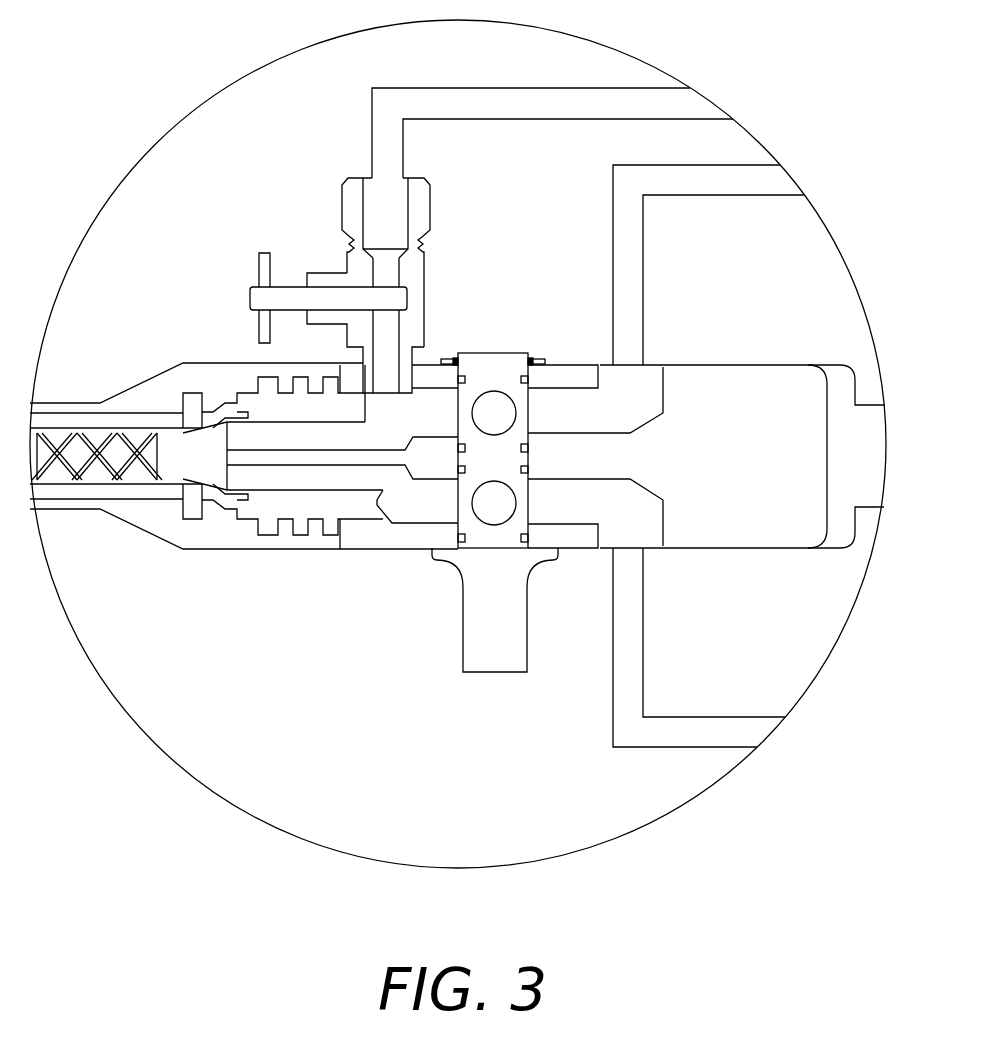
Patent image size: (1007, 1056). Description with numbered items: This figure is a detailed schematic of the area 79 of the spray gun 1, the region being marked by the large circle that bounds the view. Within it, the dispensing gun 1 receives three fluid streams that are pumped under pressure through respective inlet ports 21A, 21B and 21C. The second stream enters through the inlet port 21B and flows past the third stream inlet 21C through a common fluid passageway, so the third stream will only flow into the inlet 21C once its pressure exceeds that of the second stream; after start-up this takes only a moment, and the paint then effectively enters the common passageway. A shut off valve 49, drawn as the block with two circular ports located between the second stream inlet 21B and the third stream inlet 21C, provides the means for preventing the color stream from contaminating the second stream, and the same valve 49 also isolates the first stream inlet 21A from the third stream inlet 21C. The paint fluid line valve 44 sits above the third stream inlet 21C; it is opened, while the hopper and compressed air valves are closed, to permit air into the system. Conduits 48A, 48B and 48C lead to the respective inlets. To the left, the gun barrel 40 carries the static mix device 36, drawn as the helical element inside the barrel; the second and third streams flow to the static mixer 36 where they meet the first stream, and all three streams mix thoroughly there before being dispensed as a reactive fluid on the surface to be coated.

The spray gun 1 is at (763, 365).
The first stream inlet port 21A is at (625, 548).
The second stream inlet port 21B is at (622, 364).
The third stream inlet port 21C is at (383, 392).
The static mix device 36 is at (95, 452).
The gun barrel 40 is at (72, 510).
The paint fluid line valve 44 is at (345, 181).
The conduit 48A is at (681, 717).
The conduit 48B is at (725, 196).
The conduit 48C is at (535, 119).
The shut off valve 49 is at (463, 620).
The area 79 is at (187, 115).